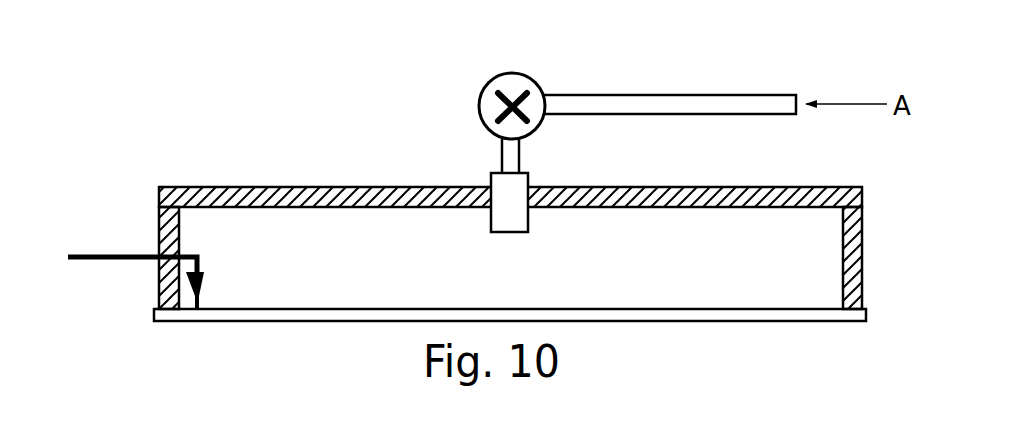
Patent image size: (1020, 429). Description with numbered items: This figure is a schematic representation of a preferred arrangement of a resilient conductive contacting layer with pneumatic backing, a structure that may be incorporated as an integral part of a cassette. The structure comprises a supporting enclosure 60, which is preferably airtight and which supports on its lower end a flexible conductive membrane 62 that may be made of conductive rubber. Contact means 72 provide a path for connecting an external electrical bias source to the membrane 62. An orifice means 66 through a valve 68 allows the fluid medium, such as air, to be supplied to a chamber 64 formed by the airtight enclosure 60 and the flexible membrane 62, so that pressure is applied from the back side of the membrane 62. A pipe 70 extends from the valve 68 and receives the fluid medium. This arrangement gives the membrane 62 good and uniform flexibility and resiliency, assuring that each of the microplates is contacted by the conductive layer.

The supporting enclosure 60 is at (240, 187).
The conductive membrane 62 is at (287, 318).
The chamber 64 is at (385, 281).
The orifice means 66 is at (497, 180).
The valve 68 is at (487, 102).
The pipe 70 is at (640, 108).
The contact means 72 is at (132, 252).